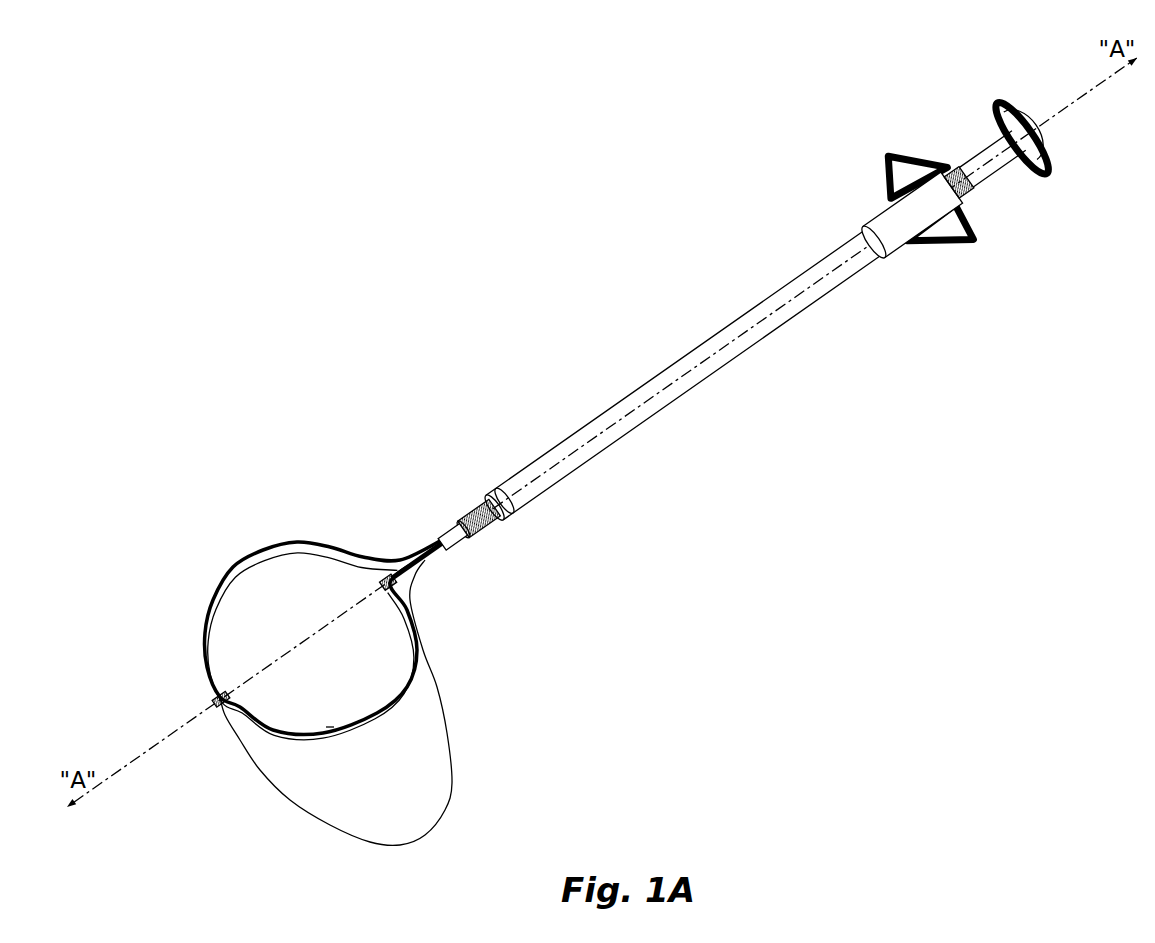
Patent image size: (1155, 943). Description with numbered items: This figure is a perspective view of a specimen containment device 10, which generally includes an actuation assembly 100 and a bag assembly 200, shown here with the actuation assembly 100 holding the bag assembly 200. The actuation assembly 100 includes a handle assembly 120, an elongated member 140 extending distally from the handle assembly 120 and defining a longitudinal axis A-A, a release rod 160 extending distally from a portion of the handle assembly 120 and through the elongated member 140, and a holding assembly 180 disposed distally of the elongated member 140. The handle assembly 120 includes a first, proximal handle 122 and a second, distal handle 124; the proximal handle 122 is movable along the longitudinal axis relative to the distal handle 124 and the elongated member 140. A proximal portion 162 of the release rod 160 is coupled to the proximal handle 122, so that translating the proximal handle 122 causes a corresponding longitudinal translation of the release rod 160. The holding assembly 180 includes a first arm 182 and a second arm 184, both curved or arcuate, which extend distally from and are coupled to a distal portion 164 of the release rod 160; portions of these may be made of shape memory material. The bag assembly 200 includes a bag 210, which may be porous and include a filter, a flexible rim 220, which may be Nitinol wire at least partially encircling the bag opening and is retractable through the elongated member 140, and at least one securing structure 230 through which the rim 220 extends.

The specimen containment device 10 is at (522, 312).
The actuation assembly 100 is at (692, 256).
The handle assembly 120 is at (965, 123).
The proximal handle 122 is at (1000, 177).
The distal handle 124 is at (897, 242).
The elongated member 140 is at (628, 392).
The release rod 160 is at (953, 173).
The proximal portion of release rod 162 is at (970, 194).
The distal portion of release rod 164 is at (405, 572).
The holding assembly 180 is at (402, 537).
The first arm 182 is at (255, 551).
The second arm 184 is at (345, 722).
The bag assembly 200 is at (340, 528).
The bag 210 is at (443, 752).
The rim 220 is at (330, 728).
The securing structure 230 is at (383, 580).